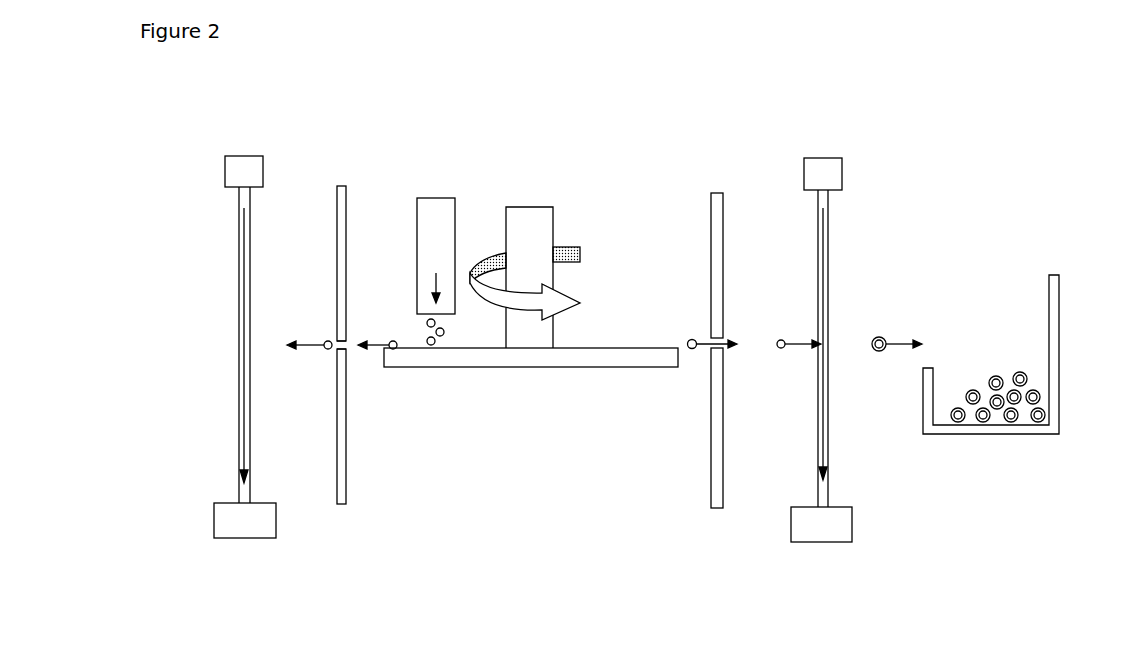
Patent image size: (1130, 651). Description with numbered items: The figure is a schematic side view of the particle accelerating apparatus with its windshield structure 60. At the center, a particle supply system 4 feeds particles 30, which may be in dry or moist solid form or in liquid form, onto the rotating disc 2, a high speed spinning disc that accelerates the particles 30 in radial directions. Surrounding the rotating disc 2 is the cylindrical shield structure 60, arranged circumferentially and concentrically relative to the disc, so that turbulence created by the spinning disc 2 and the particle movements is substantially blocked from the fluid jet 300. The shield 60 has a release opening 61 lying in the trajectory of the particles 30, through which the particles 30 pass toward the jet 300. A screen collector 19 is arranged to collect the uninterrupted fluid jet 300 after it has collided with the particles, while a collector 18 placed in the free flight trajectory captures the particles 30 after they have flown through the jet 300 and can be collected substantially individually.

The rotating disc 2 is at (573, 354).
The particle supply system 4 is at (437, 225).
The collector 18 is at (1055, 365).
The screen collector 19 is at (239, 532).
The particles 30 is at (325, 349).
The windshield structure 60 is at (348, 477).
The release opening 61 is at (349, 350).
The fluid jet 300 is at (251, 236).